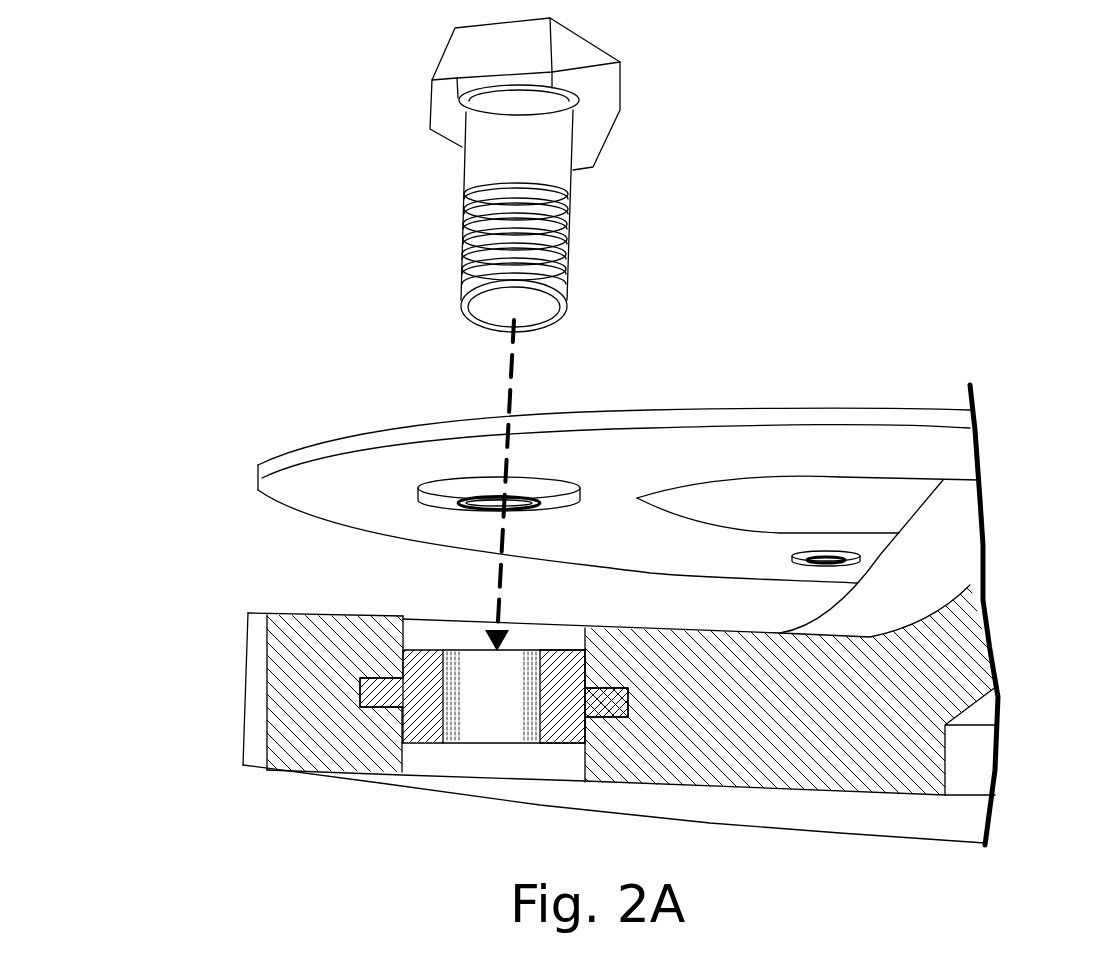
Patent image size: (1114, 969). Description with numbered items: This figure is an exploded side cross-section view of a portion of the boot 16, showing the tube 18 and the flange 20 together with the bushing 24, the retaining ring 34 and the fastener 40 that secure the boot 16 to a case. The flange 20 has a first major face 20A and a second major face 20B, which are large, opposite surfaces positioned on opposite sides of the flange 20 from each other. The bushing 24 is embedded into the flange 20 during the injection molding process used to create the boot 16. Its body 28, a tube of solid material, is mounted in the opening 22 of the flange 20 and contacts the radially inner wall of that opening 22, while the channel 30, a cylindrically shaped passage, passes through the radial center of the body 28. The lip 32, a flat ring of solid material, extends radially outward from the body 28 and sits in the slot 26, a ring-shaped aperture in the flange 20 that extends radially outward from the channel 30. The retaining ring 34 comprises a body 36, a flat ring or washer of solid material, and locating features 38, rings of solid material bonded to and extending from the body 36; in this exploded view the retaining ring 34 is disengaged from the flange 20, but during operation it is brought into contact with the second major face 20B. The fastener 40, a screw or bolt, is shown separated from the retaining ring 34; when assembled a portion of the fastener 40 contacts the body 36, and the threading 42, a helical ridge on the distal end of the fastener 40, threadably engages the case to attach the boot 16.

The boot 16 is at (685, 549).
The tube 18 is at (953, 515).
The flange 20 is at (557, 694).
The first major face 20A is at (332, 773).
The second major face 20B is at (320, 612).
The opening 22 is at (553, 630).
The bushing 24 is at (496, 719).
The slot 26 is at (605, 718).
The body 28 is at (560, 745).
The channel 30 is at (465, 652).
The lip 32 is at (378, 697).
The retaining ring 34 is at (807, 404).
The body 36 is at (877, 410).
The locating features 38 is at (455, 477).
The fastener 40 is at (425, 101).
The threading 42 is at (462, 240).